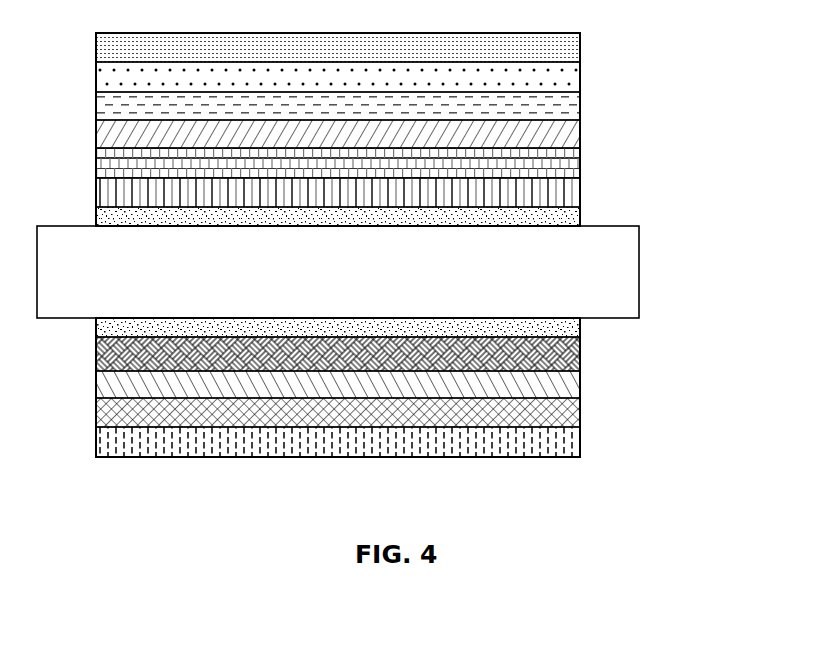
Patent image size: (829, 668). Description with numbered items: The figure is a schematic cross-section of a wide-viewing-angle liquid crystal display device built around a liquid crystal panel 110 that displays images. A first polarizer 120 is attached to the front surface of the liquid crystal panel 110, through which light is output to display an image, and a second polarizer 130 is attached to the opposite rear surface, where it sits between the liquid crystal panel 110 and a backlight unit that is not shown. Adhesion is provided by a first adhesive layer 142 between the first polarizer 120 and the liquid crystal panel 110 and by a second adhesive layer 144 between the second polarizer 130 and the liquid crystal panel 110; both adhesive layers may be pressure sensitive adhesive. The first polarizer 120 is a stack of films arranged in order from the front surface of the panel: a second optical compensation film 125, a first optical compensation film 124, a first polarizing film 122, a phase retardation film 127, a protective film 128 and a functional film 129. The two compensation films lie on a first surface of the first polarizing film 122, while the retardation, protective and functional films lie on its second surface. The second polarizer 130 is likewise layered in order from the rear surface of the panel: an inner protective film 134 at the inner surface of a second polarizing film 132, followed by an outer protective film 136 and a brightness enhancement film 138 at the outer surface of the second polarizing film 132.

The liquid crystal panel 110 is at (628, 273).
The first polarizer 120 is at (423, 109).
The first polarizing film 122 is at (571, 134).
The first optical compensation film 124 is at (571, 163).
The second optical compensation film 125 is at (391, 185).
The phase retardation film 127 is at (571, 106).
The protective film 128 is at (571, 79).
The functional film 129 is at (571, 52).
The second polarizer 130 is at (422, 408).
The second polarizing film 132 is at (571, 385).
The inner protective film 134 is at (571, 354).
The outer protective film 136 is at (571, 413).
The brightness enhancement film 138 is at (391, 453).
The first adhesive layer 142 is at (571, 217).
The second adhesive layer 144 is at (571, 327).